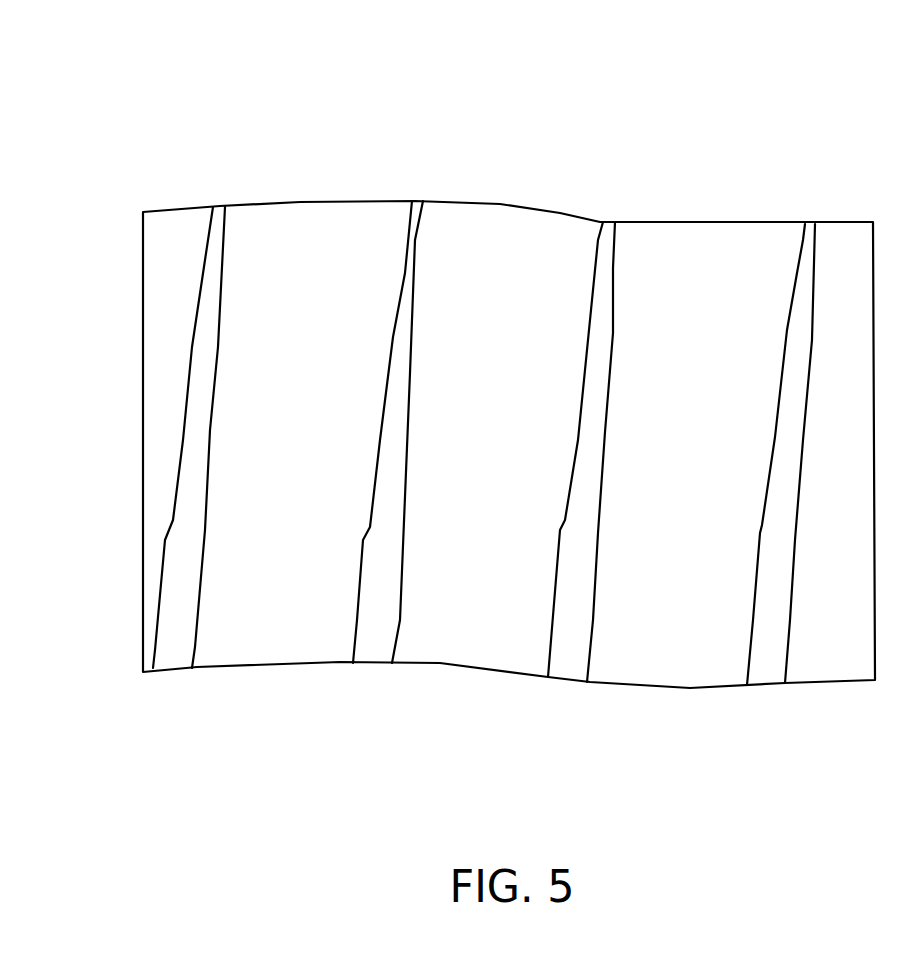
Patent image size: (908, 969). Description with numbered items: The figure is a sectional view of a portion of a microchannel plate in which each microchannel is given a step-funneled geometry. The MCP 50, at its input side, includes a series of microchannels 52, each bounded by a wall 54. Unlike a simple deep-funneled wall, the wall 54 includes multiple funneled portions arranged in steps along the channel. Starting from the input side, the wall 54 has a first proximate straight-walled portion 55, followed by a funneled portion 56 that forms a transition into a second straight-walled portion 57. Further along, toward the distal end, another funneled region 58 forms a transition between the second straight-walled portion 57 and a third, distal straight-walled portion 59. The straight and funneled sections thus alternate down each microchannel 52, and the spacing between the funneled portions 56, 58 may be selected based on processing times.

The MCP 50 is at (518, 46).
The microchannel 52 is at (310, 222).
The wall 54 is at (173, 645).
The first proximate straight-walled portion 55 is at (208, 261).
The funneled portion 56 is at (195, 330).
The second straight-walled portion 57 is at (185, 432).
The funneled region 58 is at (172, 527).
The third distal straight-walled portion 59 is at (160, 617).